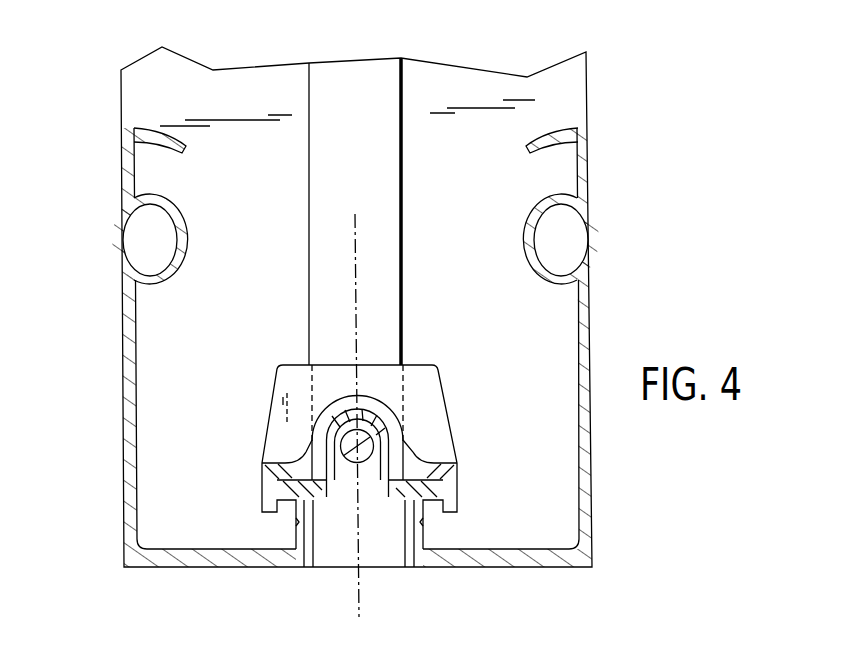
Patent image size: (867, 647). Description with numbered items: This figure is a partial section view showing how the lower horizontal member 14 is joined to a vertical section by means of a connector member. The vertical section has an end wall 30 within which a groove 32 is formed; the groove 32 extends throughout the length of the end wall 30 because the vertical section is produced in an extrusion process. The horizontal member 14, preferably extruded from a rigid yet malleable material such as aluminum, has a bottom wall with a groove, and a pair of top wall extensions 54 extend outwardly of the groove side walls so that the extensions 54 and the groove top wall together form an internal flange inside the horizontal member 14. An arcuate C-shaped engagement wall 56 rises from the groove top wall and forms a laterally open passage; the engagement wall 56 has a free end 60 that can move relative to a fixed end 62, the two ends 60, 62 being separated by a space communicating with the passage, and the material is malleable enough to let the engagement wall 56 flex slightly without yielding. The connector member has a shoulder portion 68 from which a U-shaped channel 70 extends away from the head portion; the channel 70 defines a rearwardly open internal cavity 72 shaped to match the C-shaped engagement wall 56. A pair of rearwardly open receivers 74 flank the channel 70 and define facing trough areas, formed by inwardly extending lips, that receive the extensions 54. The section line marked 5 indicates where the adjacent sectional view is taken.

The horizontal member 14 is at (118, 502).
The end wall 30 is at (170, 333).
The groove 32 is at (360, 88).
The section line 5- 5 is at (355, 201).
The top wall extensions 54 is at (291, 500).
The C-shaped engagement wall 56 is at (341, 396).
The free end 60 is at (386, 438).
The fixed end 62 is at (392, 452).
The shoulder portion 68 is at (452, 376).
The U-shaped channel 70 is at (391, 397).
The internal cavity 72 is at (333, 436).
The receivers 74 is at (250, 492).